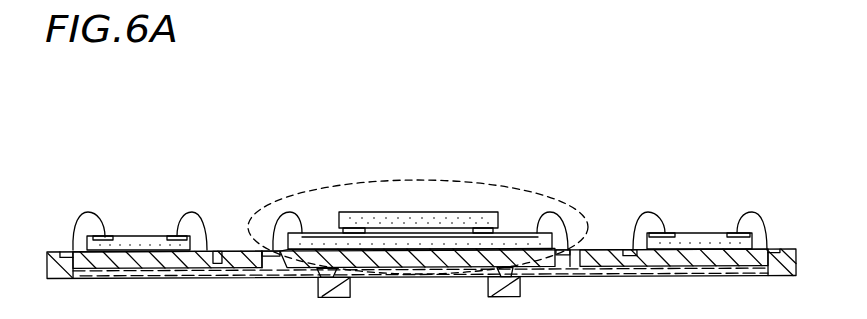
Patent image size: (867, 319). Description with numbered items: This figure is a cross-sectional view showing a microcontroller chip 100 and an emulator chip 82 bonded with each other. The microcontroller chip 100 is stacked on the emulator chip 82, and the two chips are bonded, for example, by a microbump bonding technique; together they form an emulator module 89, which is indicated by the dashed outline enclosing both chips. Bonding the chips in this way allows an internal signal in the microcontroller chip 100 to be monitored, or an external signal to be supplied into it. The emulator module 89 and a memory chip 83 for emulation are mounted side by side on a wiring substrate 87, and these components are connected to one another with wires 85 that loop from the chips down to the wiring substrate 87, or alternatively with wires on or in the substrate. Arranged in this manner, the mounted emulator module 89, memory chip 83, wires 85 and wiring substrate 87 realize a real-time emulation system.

The emulator chip 82 is at (563, 224).
The memory chip 83 is at (131, 236).
The wires 85 is at (194, 211).
The wiring substrate 87 is at (792, 249).
The emulator module 89 is at (350, 181).
The microcontroller chip 100 is at (470, 211).